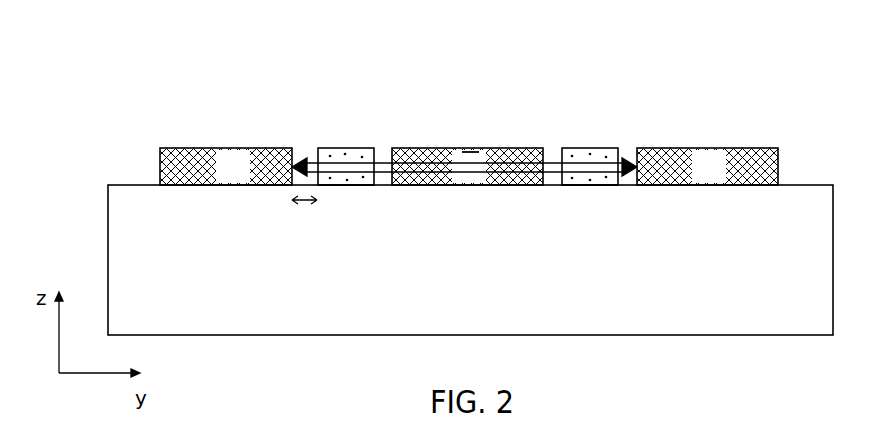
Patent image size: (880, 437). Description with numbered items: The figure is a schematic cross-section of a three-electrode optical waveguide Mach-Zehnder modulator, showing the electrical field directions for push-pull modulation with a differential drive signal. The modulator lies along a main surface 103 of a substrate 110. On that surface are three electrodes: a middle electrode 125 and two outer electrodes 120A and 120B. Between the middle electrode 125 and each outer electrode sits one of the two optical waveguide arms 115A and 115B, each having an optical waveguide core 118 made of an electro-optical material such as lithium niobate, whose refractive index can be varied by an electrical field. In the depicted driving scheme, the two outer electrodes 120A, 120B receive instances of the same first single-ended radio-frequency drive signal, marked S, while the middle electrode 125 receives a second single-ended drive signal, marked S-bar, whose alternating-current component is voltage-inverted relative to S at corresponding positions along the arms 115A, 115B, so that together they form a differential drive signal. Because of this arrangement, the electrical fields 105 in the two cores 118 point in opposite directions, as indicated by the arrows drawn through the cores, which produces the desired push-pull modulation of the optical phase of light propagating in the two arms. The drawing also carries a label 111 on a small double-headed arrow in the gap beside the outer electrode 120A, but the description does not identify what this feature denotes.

The main surface 103 is at (131, 185).
The substrate 110 is at (470, 260).
The outer electrode 120A is at (197, 148).
The outer electrode 120B is at (686, 148).
The middle electrode 125 is at (430, 148).
The electrical fields 105 is at (365, 148).
The optical waveguide arm 115A is at (337, 106).
The optical waveguide arm 115B is at (587, 108).
The gap 111 is at (302, 206).
The optical waveguide core 118 is at (345, 187).